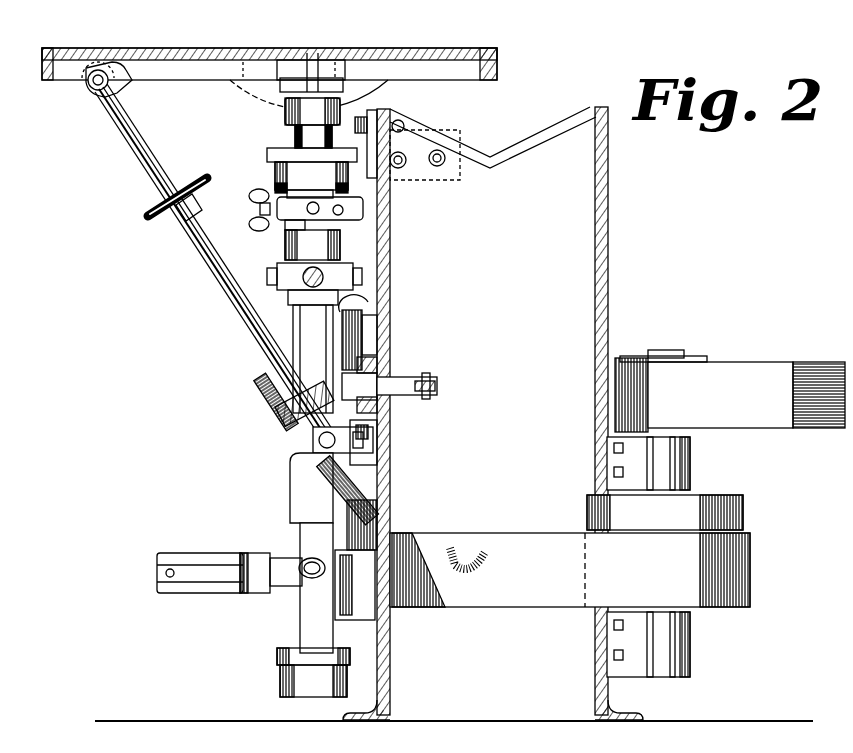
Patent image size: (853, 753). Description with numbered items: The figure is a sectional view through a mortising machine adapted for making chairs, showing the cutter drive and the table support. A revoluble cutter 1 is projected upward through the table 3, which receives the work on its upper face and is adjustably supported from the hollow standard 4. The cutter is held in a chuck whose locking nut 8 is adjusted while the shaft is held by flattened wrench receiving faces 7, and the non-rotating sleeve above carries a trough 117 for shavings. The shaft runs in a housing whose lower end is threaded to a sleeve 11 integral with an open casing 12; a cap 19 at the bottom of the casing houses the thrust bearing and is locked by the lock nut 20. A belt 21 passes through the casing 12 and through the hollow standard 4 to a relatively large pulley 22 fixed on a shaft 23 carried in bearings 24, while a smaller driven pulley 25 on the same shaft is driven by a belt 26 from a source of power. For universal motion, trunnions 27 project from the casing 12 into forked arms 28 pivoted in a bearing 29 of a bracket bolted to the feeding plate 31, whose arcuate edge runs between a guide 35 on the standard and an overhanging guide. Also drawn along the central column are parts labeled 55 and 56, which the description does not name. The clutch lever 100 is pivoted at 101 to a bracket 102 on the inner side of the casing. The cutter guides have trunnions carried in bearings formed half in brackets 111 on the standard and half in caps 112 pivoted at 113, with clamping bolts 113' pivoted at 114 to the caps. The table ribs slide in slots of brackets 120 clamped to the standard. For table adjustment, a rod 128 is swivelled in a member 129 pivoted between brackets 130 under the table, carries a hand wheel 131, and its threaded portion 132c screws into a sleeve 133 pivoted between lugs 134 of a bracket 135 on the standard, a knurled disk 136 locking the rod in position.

The revoluble cutter 1 is at (322, 65).
The table 3 is at (192, 48).
The hollow standard 4 is at (610, 238).
The flattened wrench receiving faces 7 is at (320, 145).
The locking nut 8 is at (286, 113).
The sleeve 11 is at (333, 501).
The open casing 12 is at (316, 588).
The cap 19 is at (282, 685).
The lock nut 20 is at (278, 660).
The belt 21 is at (500, 548).
The pulley 22 is at (665, 512).
The shaft 23 is at (668, 350).
The bearings 24 is at (692, 462).
The driven pulley 25 is at (703, 357).
The belt 26 is at (730, 395).
The trunnions 27 is at (300, 590).
The forked arms 28 is at (255, 560).
The bearing 29 is at (190, 568).
The feeding plate 31 is at (372, 630).
The guide 35 is at (374, 485).
The tube 55 is at (265, 292).
The cross head 56 is at (385, 275).
The lever 100 is at (440, 386).
The pivotal point 101 is at (430, 400).
The bracket 102 is at (412, 375).
The brackets 111 is at (362, 226).
The caps 112 is at (283, 190).
The pivot 113 is at (356, 205).
The clamping bolts 113' is at (269, 240).
The pivot 114 is at (276, 206).
The trough 117 is at (283, 152).
The brackets 120 is at (380, 107).
The rod 128 is at (215, 290).
The member 129 is at (100, 112).
The brackets 130 is at (83, 66).
The hand wheel 131 is at (146, 208).
The threaded portion 132c is at (275, 377).
The sleeve 133 is at (300, 440).
The lugs 134 is at (322, 465).
The bracket 135 is at (375, 455).
The knurled disk 136 is at (280, 424).